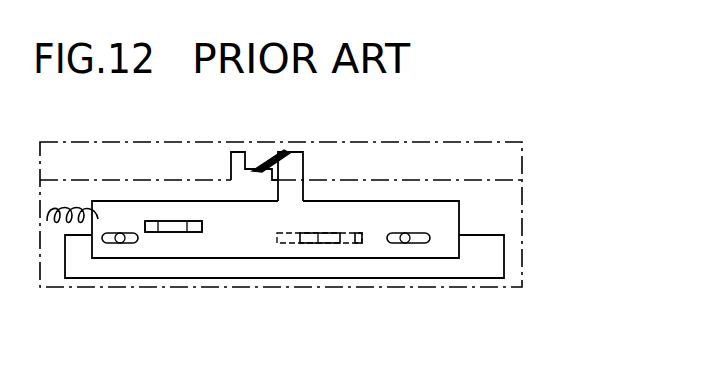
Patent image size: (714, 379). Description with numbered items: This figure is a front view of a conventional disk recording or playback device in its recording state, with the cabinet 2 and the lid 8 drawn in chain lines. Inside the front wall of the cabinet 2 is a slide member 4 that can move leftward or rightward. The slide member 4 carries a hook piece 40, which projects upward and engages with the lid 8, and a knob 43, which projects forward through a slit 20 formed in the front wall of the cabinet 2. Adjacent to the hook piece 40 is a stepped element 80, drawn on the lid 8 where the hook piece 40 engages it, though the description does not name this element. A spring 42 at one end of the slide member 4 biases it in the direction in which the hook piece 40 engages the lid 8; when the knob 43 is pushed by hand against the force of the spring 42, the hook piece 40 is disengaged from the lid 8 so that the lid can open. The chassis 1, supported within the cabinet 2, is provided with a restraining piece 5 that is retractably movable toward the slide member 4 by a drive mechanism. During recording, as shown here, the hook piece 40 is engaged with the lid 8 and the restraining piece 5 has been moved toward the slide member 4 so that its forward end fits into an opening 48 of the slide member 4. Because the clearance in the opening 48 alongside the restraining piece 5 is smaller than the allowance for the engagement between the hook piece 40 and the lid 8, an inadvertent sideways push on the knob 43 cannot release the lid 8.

The chassis 1 is at (485, 265).
The cabinet 2 is at (525, 205).
The slide member 4 is at (442, 248).
The restraining piece 5 is at (168, 221).
The lid 8 is at (400, 142).
The slit 20 is at (355, 245).
The hook piece 40 is at (288, 163).
The spring 42 is at (60, 223).
The knob 43 is at (317, 245).
The opening 48 is at (193, 233).
The hook 80 is at (242, 157).